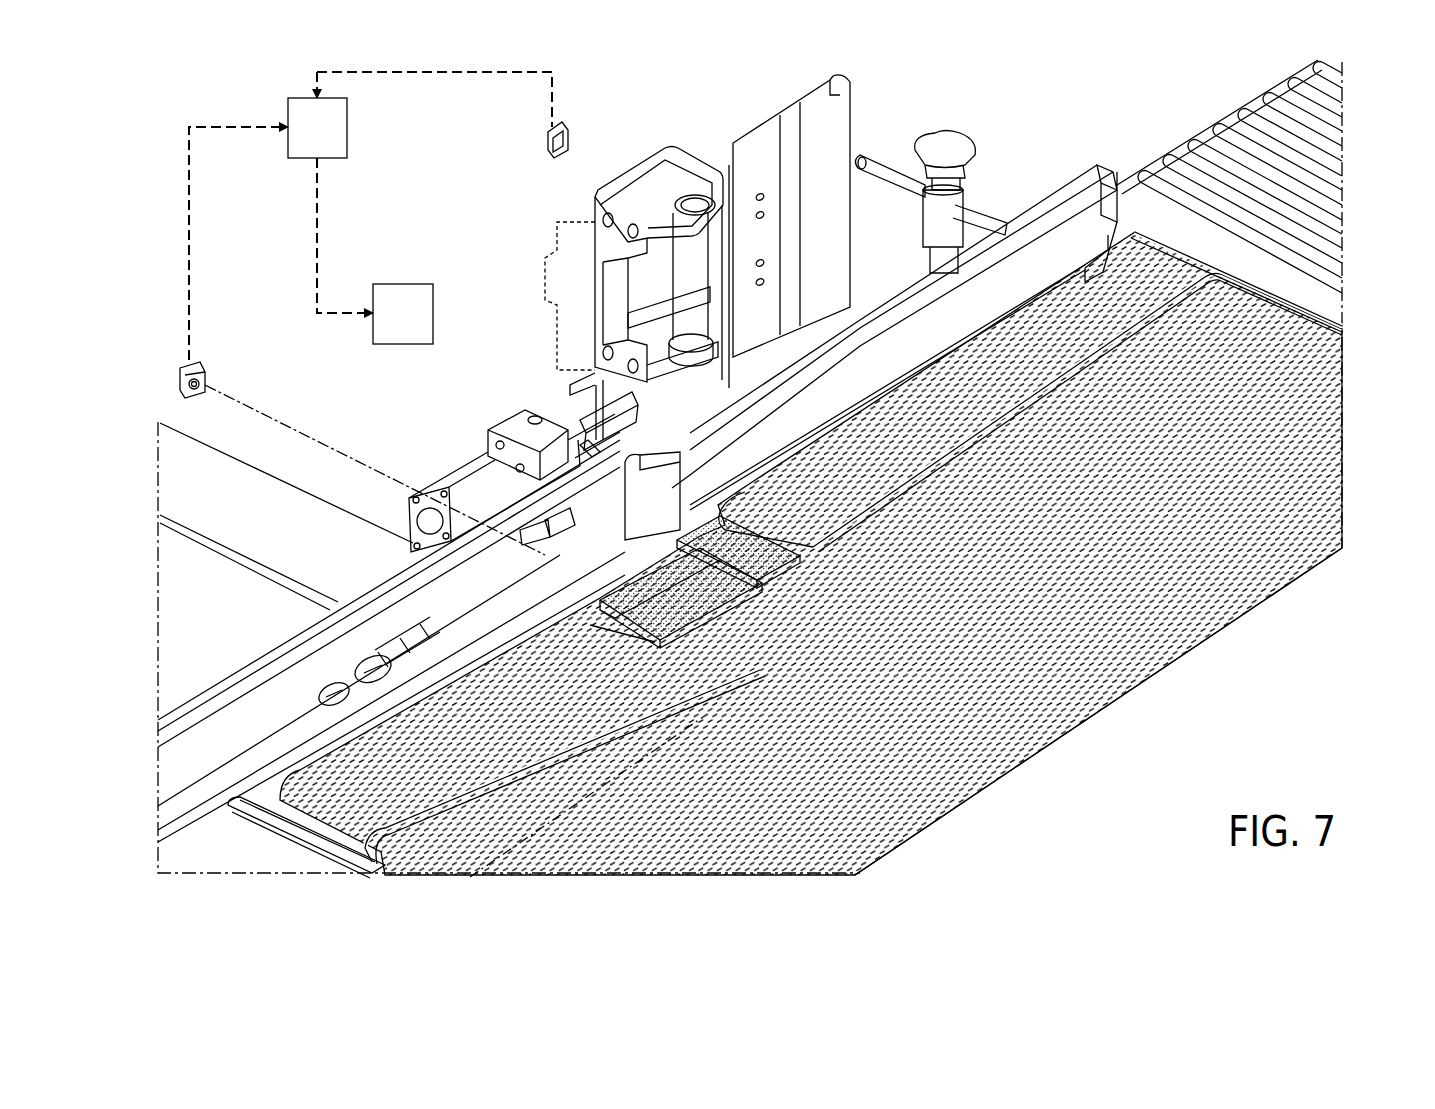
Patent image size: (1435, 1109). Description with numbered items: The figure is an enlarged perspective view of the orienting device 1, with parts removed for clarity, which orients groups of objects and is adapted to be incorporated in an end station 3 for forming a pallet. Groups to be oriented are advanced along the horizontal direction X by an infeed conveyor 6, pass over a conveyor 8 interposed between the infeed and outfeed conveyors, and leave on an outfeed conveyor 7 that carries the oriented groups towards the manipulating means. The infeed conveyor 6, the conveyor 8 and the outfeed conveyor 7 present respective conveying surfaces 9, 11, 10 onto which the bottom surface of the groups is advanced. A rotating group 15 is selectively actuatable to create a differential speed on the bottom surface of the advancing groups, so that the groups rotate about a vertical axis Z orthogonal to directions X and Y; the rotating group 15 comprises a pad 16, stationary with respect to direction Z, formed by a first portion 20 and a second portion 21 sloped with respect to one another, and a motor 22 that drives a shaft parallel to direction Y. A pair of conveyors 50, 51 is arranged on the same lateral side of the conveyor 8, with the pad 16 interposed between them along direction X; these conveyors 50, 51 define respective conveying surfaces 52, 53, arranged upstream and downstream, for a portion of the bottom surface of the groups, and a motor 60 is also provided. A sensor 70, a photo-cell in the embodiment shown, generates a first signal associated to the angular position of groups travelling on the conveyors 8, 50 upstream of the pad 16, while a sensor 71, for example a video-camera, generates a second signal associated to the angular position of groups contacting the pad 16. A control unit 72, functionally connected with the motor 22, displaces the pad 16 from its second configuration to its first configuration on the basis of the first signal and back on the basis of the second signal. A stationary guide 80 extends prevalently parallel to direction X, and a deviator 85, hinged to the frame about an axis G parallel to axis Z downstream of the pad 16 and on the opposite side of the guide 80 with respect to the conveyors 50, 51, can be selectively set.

The orienting device 1 is at (723, 465).
The end station 3 is at (1022, 170).
The infeed conveyor 6 is at (215, 818).
The outfeed conveyor 7 is at (1266, 176).
The conveyor 8 is at (1017, 653).
The conveying surface 9 is at (192, 842).
The conveying surface 10 is at (1293, 98).
The conveying surface 11 is at (1268, 405).
The rotating group 15 is at (597, 528).
The pad 16 is at (622, 580).
The first portion 20 is at (633, 588).
The second portion 21 is at (715, 545).
The motor 22 is at (408, 310).
The conveyor 50 is at (525, 683).
The conveyor 51 is at (1155, 262).
The conveying surface 52 is at (446, 740).
The conveying surface 53 is at (1088, 260).
The motor 60 is at (470, 478).
The sensor 70 is at (182, 382).
The sensor 71 is at (548, 140).
The control unit 72 is at (322, 124).
The guide 80 is at (960, 290).
The deviator 85 is at (770, 172).